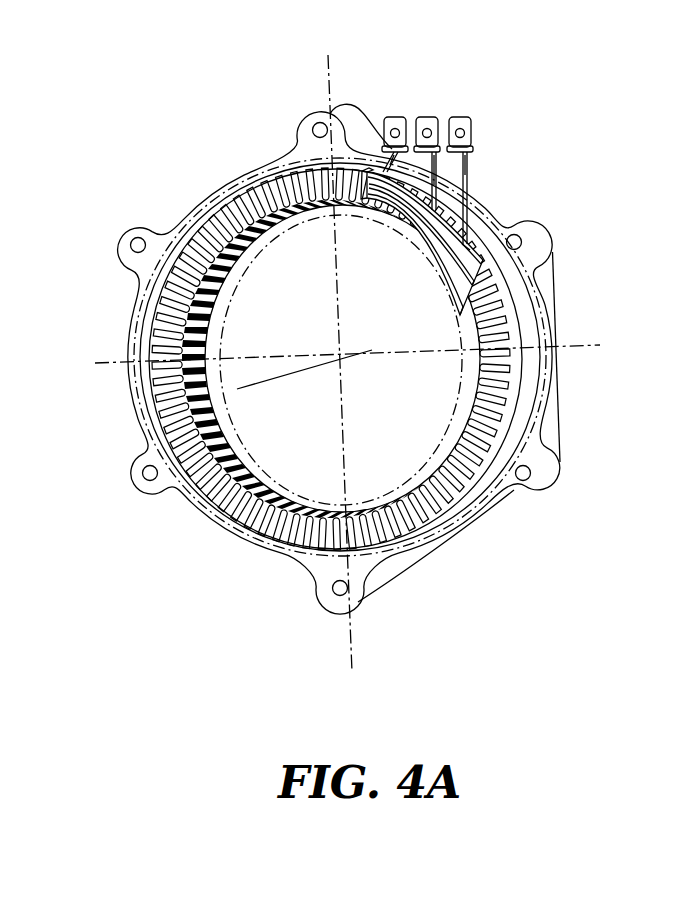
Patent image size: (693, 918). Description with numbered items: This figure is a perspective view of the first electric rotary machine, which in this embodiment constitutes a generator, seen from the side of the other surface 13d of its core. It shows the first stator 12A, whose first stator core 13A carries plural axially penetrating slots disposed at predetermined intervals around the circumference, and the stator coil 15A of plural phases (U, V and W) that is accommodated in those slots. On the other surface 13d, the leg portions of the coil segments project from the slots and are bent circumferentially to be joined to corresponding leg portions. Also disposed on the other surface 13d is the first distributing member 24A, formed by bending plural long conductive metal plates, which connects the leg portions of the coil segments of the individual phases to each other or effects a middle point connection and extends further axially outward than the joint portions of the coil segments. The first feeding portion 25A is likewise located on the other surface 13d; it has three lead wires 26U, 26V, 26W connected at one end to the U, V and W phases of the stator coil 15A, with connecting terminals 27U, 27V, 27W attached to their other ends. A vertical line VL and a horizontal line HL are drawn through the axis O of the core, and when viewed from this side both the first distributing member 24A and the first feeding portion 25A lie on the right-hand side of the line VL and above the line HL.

The first stator 12A is at (224, 173).
The first stator core 13A is at (542, 382).
The other surface 13d is at (502, 485).
The stator coil 15A is at (178, 483).
The first distributing member 24A is at (472, 251).
The first feeding portion 25A is at (481, 141).
The lead wire 26U is at (440, 166).
The lead wire 26V is at (420, 187).
The lead wire 26W is at (440, 194).
The connecting terminal 27U is at (505, 118).
The connecting terminal 27V is at (428, 117).
The connecting terminal 27W is at (396, 117).
The line HL is at (573, 347).
The line VL is at (352, 640).
The axis O is at (263, 383).